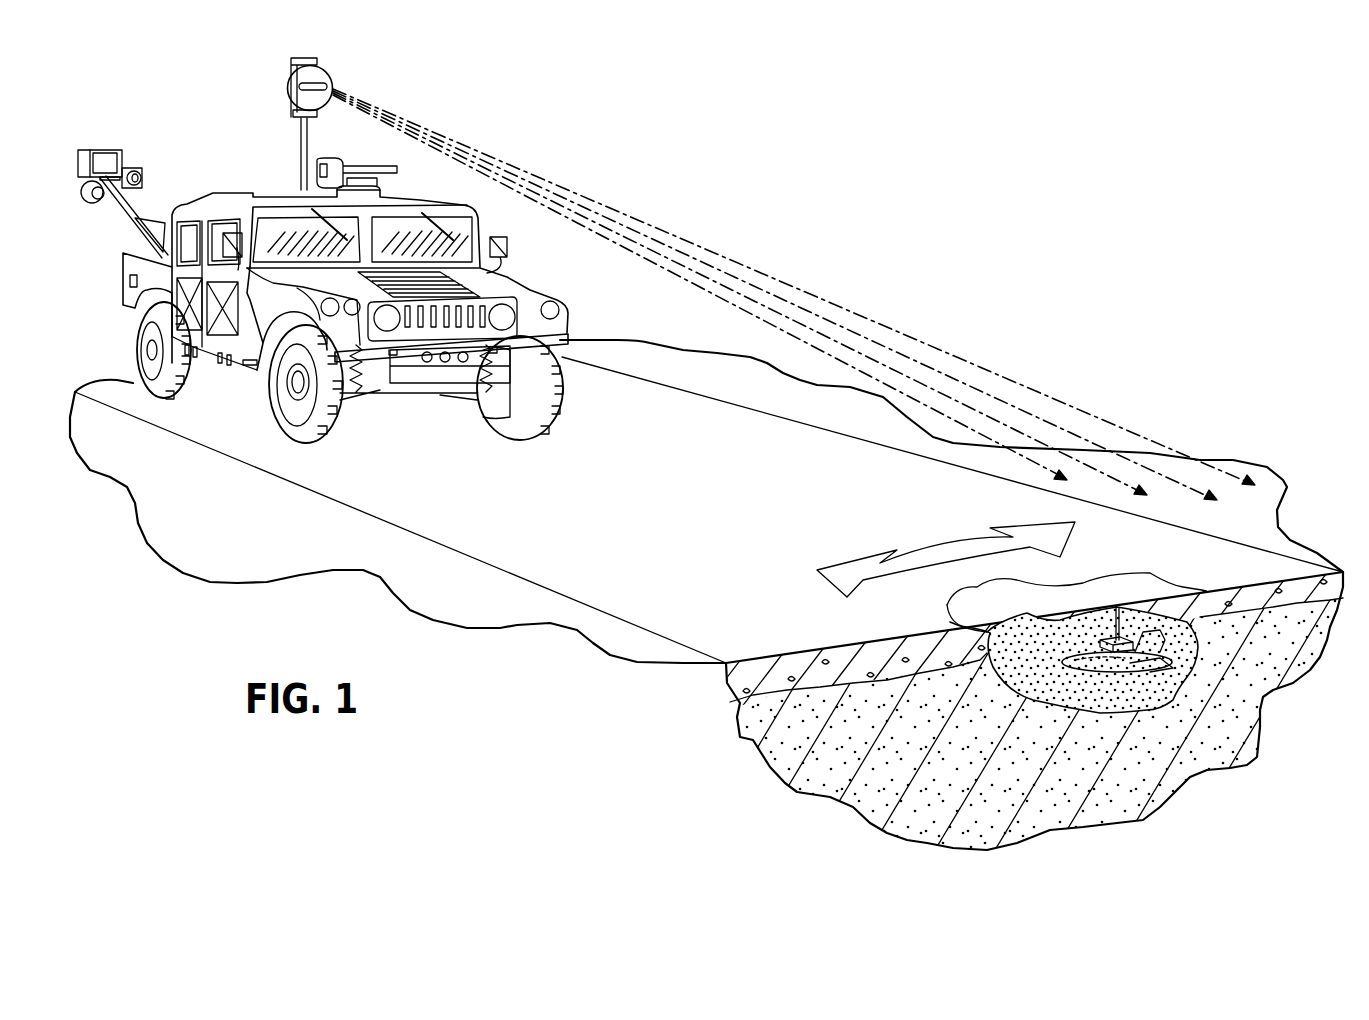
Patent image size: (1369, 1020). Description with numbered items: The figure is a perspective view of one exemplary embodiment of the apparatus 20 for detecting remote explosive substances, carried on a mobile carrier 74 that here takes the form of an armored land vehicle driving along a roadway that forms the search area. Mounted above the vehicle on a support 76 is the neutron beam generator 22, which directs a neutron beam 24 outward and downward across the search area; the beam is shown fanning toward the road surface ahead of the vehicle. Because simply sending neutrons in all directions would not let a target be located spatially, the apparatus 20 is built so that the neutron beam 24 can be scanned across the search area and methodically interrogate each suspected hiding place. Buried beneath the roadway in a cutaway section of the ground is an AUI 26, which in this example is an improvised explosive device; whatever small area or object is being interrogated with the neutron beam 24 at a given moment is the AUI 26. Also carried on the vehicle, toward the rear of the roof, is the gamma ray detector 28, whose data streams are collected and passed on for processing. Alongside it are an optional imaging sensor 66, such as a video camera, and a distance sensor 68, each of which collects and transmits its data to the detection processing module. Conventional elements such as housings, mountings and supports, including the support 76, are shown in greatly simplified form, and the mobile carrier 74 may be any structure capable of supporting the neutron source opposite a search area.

The apparatus 20 is at (332, 110).
The neutron beam generator 22 is at (337, 72).
The neutron beam 24 is at (900, 372).
The AUI 26 is at (1125, 665).
The gamma ray detector 28 is at (134, 171).
The imaging sensor 66 is at (134, 170).
The distance sensor 68 is at (90, 203).
The mobile carrier 74 is at (242, 193).
The mast 76 is at (300, 148).